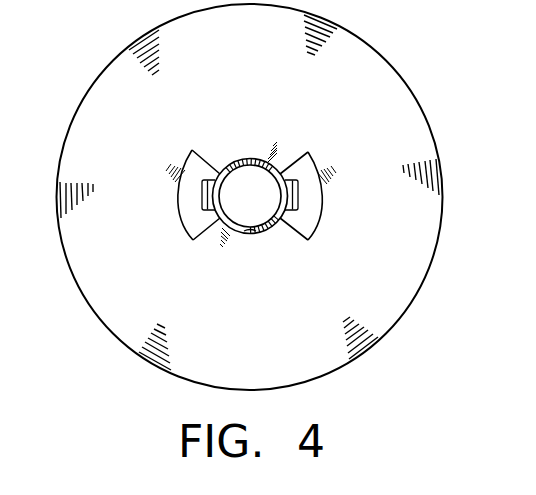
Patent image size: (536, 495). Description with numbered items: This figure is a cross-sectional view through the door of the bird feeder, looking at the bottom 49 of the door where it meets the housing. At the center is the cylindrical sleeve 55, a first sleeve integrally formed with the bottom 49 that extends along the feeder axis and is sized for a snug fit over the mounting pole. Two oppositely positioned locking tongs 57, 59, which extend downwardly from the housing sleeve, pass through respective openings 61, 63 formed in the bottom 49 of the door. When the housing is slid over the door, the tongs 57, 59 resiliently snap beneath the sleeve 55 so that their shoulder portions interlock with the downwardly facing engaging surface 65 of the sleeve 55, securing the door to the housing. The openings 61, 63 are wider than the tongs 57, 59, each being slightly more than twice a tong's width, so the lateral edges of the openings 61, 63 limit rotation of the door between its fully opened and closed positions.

The bottom 49 is at (121, 78).
The cylindrical sleeve 55 is at (252, 158).
The locking tong 57 is at (204, 201).
The locking tong 59 is at (296, 200).
The opening 61 is at (182, 189).
The opening 63 is at (306, 167).
The engaging surface 65 is at (250, 235).